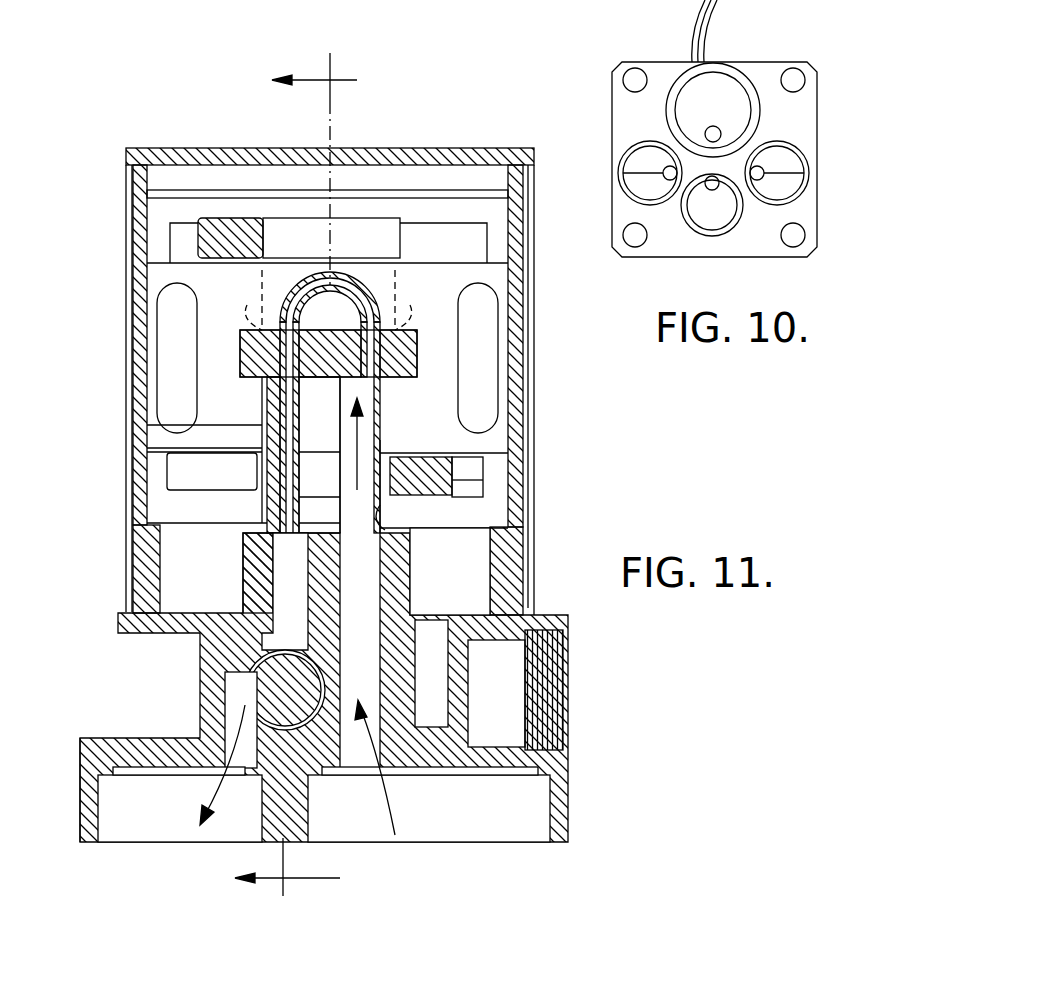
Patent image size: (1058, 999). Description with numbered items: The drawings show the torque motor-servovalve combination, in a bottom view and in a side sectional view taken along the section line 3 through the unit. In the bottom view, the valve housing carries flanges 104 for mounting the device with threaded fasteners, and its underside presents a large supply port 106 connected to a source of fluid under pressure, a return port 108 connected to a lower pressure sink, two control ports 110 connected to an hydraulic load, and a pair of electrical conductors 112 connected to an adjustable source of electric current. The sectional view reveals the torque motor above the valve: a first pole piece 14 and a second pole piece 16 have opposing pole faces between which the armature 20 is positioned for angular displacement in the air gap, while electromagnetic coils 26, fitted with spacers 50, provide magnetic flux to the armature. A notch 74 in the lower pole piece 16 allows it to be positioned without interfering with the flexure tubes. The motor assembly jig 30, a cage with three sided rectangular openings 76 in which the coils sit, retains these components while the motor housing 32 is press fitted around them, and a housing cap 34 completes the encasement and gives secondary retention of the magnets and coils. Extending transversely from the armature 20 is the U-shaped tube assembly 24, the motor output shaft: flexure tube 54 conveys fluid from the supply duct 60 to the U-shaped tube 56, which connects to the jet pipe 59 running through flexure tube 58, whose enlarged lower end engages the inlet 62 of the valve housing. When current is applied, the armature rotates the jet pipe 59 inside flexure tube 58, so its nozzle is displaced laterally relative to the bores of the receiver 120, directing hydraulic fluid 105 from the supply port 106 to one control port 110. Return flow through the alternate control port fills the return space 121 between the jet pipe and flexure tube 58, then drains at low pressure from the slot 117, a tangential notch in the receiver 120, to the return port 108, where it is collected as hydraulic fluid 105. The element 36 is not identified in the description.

In FIG. 11, the section line 3— 3 is at (300, 473).
In FIG. 11, the first pole piece 14 is at (195, 240).
In FIG. 11, the second pole piece 16 is at (440, 481).
In FIG. 11, the armature 20 is at (245, 357).
In FIG. 11, the U-shaped tube assembly 24 is at (400, 403).
In FIG. 11, the electromagnetic coils 26 is at (420, 275).
In FIG. 11, the motor assembly jig 30 is at (140, 272).
In FIG. 11, the motor housing 32 is at (120, 540).
In FIG. 11, the housing cap 34 is at (200, 148).
In FIG. 11, the bracket 36 is at (520, 495).
In FIG. 11, the spacers 50 is at (180, 310).
In FIG. 11, the flexure tube 54 is at (400, 440).
In FIG. 11, the U-shaped tube 56 is at (322, 285).
In FIG. 11, the flexure tube 58 is at (265, 430).
In FIG. 11, the jet pipe 59 is at (240, 600).
In FIG. 11, the supply duct 60 is at (372, 590).
In FIG. 11, the inlet 62 is at (500, 852).
In FIG. 11, the notch 74 is at (400, 510).
In FIG. 11, the three sided rectangular openings 76 is at (515, 245).
In FIG. 10, the flanges 104 is at (622, 70).
In FIG. 11, the hydraulic fluid 105 is at (222, 790).
In FIG. 11, the supply port 106 is at (525, 800).
In FIG. 10, the supply port 106 is at (713, 134).
In FIG. 11, the return port 108 is at (135, 840).
In FIG. 10, the return port 108 is at (712, 190).
In FIG. 10, the control ports 110 is at (670, 173).
In FIG. 10, the electrical conductors 112 is at (690, 16).
In FIG. 11, the slot 117 is at (262, 677).
In FIG. 11, the receiver 120 is at (270, 700).
In FIG. 11, the return space 121 is at (270, 650).